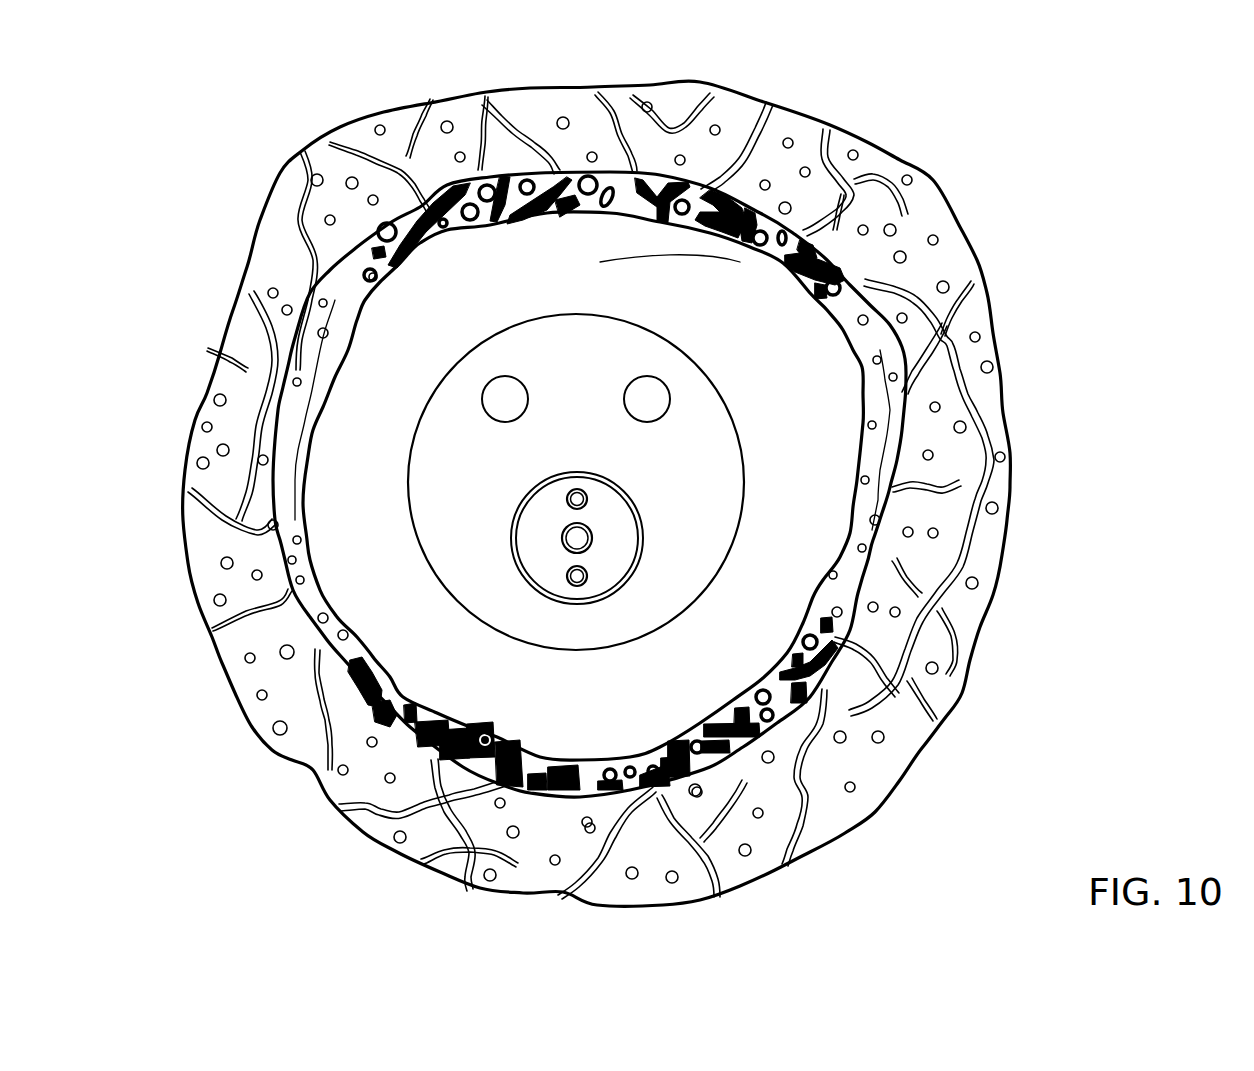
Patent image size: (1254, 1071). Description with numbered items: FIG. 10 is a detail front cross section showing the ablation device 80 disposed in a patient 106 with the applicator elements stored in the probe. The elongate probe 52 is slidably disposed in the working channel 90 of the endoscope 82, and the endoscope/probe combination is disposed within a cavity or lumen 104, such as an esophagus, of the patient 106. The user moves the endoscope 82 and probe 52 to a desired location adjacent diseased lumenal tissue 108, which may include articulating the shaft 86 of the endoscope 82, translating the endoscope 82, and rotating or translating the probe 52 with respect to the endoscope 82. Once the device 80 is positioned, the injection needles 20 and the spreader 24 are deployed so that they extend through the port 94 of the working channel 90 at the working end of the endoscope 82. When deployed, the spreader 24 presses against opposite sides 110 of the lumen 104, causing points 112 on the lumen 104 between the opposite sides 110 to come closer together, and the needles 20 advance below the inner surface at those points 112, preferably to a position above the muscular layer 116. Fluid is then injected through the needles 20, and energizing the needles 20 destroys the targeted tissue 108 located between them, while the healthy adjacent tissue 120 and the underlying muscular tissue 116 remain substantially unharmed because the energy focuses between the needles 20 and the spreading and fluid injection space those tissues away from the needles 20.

The injection needles 20 is at (600, 490).
The spreader 24 is at (520, 513).
The elongate probe 52 is at (590, 562).
The ablation device 80 is at (597, 265).
The endoscope 82 is at (501, 320).
The shaft 86 is at (460, 360).
The working channel 90 is at (577, 538).
The port 94 is at (640, 522).
The lumen 104 is at (835, 347).
The patient 106 is at (1003, 240).
The diseased lumenal tissue 108 is at (640, 207).
The opposite sides 110 is at (320, 450).
The points 112 is at (597, 213).
The muscular layer 116 is at (860, 767).
The healthy adjacent tissue 120 is at (863, 530).